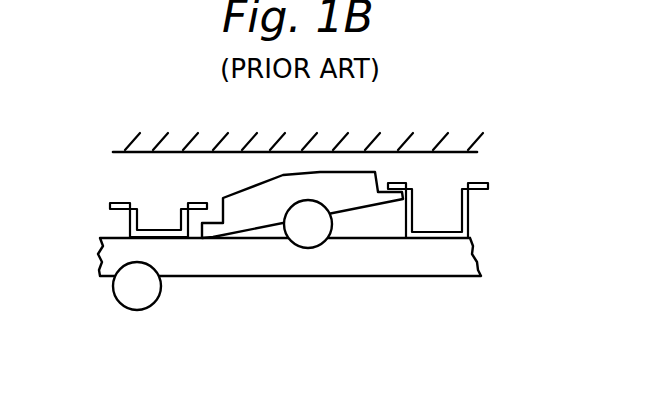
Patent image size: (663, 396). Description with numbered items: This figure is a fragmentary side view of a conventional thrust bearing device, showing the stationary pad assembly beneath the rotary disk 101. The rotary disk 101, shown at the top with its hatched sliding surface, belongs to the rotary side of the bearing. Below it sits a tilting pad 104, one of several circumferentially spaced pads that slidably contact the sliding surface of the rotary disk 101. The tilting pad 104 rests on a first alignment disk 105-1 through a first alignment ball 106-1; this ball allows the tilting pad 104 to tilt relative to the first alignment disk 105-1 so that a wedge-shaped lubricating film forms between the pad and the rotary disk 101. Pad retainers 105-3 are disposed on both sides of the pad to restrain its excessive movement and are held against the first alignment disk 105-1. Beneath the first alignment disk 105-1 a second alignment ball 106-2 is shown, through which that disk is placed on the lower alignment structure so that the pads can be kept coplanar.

The rotary disk 101 is at (369, 137).
The tilting pad 104 is at (262, 200).
The first alignment disk 105-1 is at (422, 267).
The pad retainer 105-3 is at (122, 200).
The first alignment ball 106-1 is at (307, 243).
The second alignment ball 106-2 is at (142, 297).